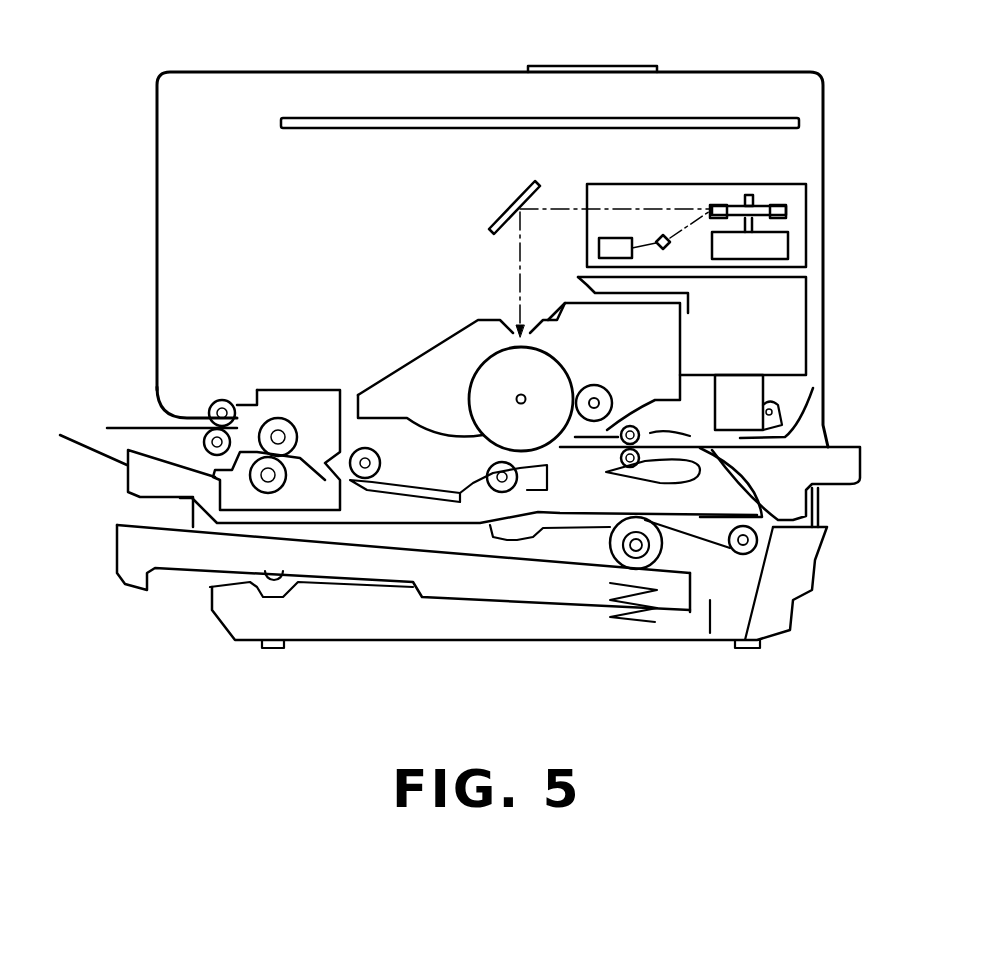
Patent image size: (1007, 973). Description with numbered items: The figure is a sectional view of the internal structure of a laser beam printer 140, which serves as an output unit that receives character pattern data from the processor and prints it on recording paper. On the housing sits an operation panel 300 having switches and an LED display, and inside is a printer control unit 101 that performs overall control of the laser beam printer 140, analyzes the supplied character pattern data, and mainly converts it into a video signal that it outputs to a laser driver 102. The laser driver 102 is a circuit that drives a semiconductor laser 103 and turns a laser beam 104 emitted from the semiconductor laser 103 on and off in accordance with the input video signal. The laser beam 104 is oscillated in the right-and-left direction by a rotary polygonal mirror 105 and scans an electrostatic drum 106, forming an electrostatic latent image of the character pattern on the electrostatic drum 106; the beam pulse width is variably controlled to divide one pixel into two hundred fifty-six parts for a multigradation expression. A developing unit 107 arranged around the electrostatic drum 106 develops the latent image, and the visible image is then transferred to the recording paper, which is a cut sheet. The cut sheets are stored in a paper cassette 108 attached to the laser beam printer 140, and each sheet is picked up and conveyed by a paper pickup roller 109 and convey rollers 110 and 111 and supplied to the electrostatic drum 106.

The operation panel 300 is at (586, 65).
The laser beam printer 140 is at (750, 72).
The printer control unit 101 is at (797, 118).
The laser driver 102 is at (598, 246).
The semiconductor laser 103 is at (668, 246).
The laser beam 104 is at (642, 209).
The rotary polygonal mirror 105 is at (787, 209).
The electrostatic drum 106 is at (478, 370).
The developing unit 107 is at (393, 383).
The paper cassette 108 is at (118, 545).
The paper pickup roller 109 is at (625, 535).
The convey roller 110 is at (745, 565).
The convey roller 111 is at (640, 463).